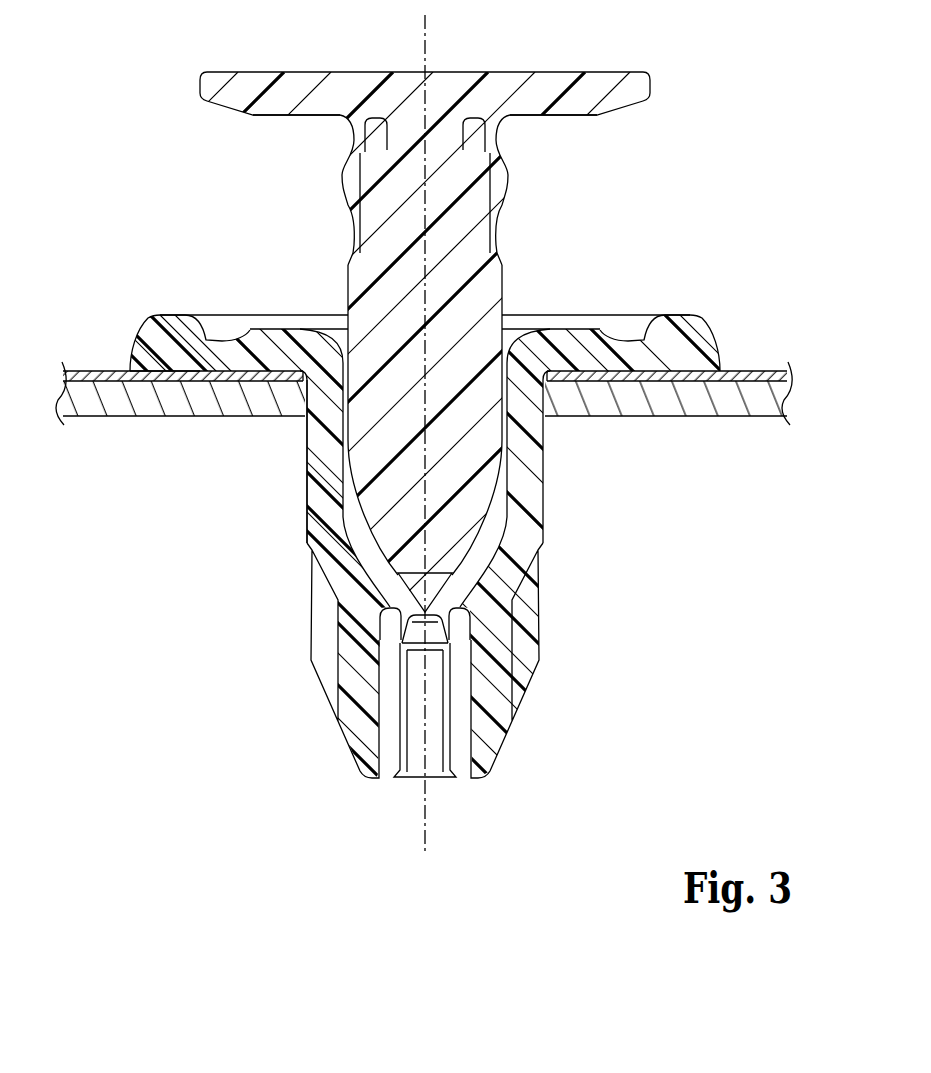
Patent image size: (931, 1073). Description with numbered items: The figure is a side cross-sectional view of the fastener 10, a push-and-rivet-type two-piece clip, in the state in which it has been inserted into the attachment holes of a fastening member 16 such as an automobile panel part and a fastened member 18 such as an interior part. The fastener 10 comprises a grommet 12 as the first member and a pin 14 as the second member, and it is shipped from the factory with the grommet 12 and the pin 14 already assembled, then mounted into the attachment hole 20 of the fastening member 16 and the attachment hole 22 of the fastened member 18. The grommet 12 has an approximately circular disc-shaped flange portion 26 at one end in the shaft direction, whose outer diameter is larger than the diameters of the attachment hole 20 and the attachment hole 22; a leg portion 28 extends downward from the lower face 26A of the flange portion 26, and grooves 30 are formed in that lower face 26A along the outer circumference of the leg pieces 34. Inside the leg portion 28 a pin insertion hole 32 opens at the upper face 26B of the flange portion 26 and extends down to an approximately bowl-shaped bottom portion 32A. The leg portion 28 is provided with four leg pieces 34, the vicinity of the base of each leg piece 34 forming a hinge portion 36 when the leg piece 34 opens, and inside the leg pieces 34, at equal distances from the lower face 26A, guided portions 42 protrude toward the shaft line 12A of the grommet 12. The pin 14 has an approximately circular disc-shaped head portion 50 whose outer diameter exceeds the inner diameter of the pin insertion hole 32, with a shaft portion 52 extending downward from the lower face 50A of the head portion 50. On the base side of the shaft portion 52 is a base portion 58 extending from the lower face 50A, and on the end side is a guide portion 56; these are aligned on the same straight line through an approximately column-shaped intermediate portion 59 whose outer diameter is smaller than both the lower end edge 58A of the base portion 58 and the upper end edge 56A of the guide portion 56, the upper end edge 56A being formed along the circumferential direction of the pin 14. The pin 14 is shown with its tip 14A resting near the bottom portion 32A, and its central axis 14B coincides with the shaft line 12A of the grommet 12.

The fastener 10 is at (465, 440).
The grommet 12 is at (465, 505).
The shaft line 12A is at (431, 846).
The pin 14 is at (464, 317).
The pin tip 14A is at (440, 575).
The pin axis 14B is at (430, 46).
The fastening member 16 is at (424, 390).
The fastened member 18 is at (757, 370).
The attachment hole 20 is at (544, 420).
The attachment hole 22 is at (542, 315).
The flange portion 26 is at (387, 379).
The lower face 26A is at (135, 372).
The upper face 26B is at (173, 313).
The leg portion 28 is at (233, 499).
The grooves 30 is at (628, 398).
The pin insertion hole 32 is at (470, 330).
The bottom portion 32A is at (363, 553).
The leg pieces 34 is at (303, 562).
The hinge portion 36 is at (305, 420).
The guided portions 42 is at (465, 616).
The head portion 50 is at (584, 72).
The lower face 50A is at (558, 117).
The shaft portion 52 is at (310, 228).
The guide portion 56 is at (508, 487).
The upper end edge 56A is at (343, 432).
The base portion 58 is at (343, 290).
The lower end edge 58A is at (303, 327).
The intermediate portion 59 is at (247, 330).